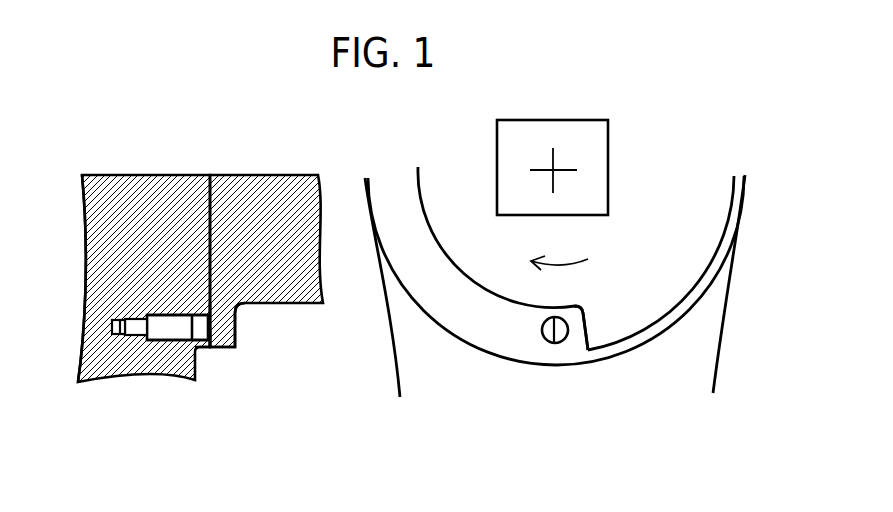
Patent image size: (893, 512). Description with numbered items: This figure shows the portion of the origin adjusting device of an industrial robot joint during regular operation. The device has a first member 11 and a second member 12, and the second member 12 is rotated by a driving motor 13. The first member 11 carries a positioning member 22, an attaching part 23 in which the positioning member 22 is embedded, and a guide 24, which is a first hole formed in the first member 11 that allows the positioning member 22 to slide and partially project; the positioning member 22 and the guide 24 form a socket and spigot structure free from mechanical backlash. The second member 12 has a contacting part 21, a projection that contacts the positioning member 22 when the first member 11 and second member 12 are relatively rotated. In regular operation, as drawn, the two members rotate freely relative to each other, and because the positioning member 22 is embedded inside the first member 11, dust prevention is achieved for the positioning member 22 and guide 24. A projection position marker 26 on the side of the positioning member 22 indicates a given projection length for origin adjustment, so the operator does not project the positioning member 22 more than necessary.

The first member 11 is at (110, 358).
The second member 12 is at (290, 303).
The driving motor 13 is at (607, 149).
The contacting part 21 is at (220, 315).
The positioning member 22 is at (172, 327).
The attaching part 23 is at (92, 257).
The guide 24 is at (167, 313).
The projection position marker 26 is at (212, 348).